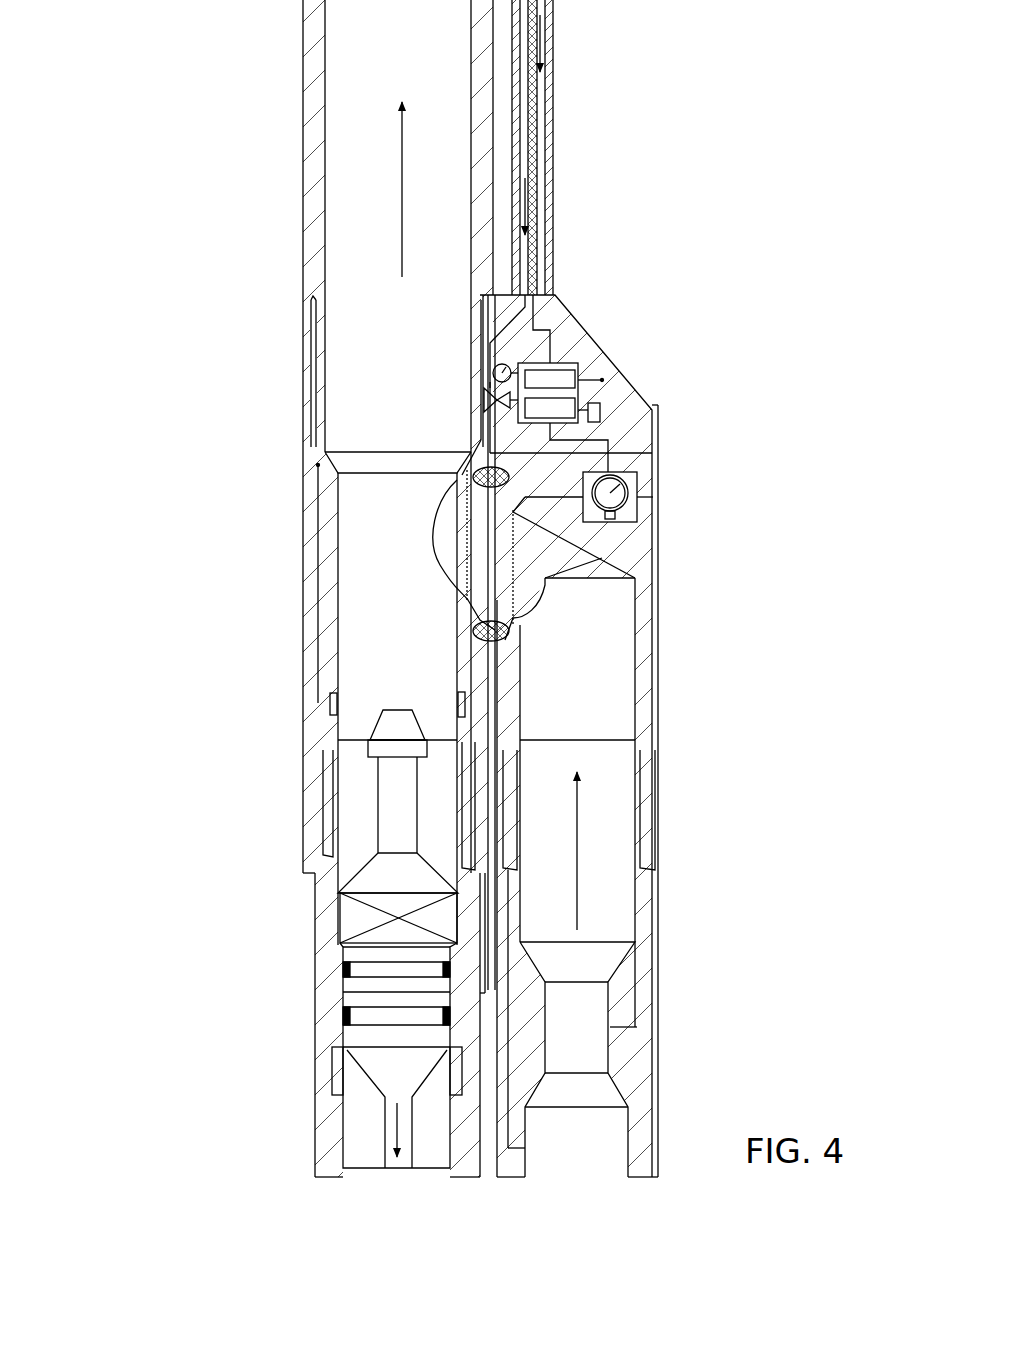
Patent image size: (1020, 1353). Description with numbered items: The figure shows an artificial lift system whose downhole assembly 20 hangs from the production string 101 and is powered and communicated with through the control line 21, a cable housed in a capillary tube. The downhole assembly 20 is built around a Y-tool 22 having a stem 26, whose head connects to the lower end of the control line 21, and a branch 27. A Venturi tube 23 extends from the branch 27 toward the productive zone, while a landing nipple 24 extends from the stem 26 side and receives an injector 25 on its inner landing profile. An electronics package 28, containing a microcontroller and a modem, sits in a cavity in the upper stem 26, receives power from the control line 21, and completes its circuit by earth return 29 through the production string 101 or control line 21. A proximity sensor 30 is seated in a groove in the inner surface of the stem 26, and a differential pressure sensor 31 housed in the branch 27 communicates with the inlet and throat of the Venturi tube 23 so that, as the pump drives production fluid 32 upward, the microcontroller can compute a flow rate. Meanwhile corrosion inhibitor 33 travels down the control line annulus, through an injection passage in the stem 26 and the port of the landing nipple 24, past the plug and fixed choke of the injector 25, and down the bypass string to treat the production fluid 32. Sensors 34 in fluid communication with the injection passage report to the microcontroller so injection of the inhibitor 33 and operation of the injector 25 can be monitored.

The downhole assembly 20 is at (135, 58).
The production string 101 is at (303, 73).
The control line 21 is at (555, 150).
The Y-tool 22 is at (228, 497).
The Venturi tube 23 is at (658, 1075).
The landing nipple 24 is at (315, 983).
The injector 25 is at (400, 710).
The stem 26 is at (305, 445).
The branch 27 is at (637, 625).
The electronics package 28 is at (565, 363).
The earth return 29 is at (600, 410).
The proximity sensor 30 is at (337, 698).
The differential pressure sensor 31 is at (637, 480).
The production fluid 32 is at (400, 142).
The corrosion inhibitor 33 is at (540, 60).
The sensors 34 is at (456, 384).